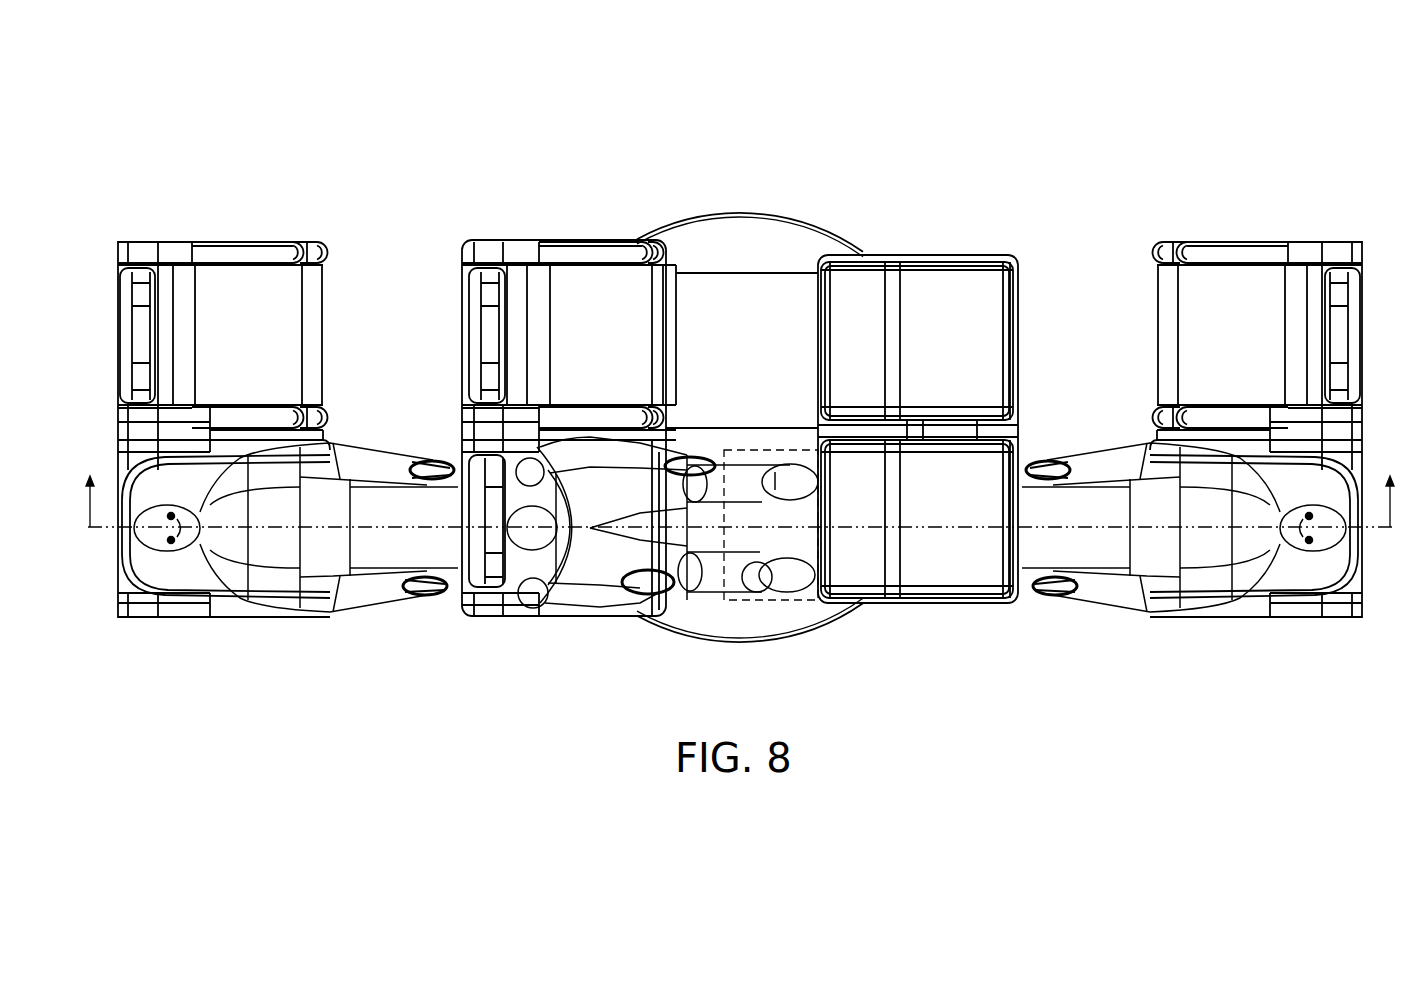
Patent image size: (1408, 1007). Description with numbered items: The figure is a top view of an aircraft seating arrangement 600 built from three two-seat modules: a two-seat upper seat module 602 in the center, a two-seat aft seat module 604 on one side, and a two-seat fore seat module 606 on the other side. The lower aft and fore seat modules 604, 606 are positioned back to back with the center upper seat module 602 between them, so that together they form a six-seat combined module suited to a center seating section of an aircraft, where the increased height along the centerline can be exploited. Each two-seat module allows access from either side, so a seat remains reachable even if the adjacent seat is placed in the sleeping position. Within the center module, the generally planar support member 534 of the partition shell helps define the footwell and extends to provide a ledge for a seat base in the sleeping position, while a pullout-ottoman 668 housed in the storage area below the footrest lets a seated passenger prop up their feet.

The seating arrangement 600 is at (573, 138).
The two-seat upper seat module 602 is at (752, 212).
The two-seat aft seat module 604 is at (270, 240).
The two-seat fore seat module 606 is at (1185, 240).
The planar support member 534 is at (862, 297).
The pullout-ottoman 668 is at (757, 450).